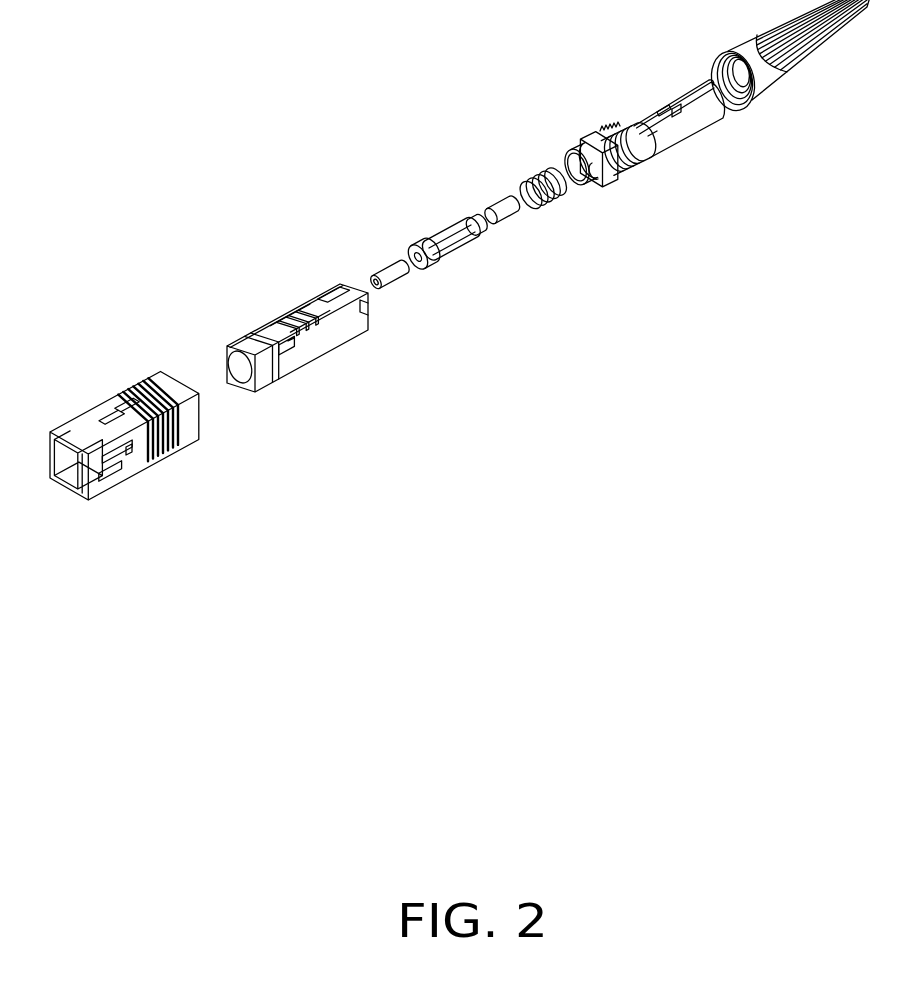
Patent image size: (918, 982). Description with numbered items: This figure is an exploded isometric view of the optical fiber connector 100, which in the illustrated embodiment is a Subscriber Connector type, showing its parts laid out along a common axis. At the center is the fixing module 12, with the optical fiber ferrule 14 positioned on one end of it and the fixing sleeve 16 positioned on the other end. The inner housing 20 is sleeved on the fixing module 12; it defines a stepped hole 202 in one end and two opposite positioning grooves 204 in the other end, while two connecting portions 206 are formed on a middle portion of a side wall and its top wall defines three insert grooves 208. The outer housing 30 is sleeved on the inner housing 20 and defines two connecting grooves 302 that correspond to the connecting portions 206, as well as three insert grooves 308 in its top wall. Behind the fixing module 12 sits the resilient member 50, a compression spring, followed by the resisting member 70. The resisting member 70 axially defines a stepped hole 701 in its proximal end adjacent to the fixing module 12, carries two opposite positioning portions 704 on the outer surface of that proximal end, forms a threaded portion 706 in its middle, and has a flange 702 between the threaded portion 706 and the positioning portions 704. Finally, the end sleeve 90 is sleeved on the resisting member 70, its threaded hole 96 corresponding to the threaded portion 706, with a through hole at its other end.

The optical fiber connector 100 is at (272, 78).
The fixing module 12 is at (440, 236).
The optical fiber ferrule 14 is at (378, 279).
The fixing sleeve 16 is at (503, 207).
The inner housing 20 is at (281, 330).
The stepped hole 202 is at (237, 366).
The positioning grooves 204 is at (364, 316).
The connecting portions 206 is at (300, 358).
The insert grooves 208 is at (305, 302).
The outer housing 30 is at (110, 430).
The connecting grooves 302 is at (127, 456).
The insert grooves 308 is at (83, 425).
The resilient member 50 is at (546, 195).
The resisting member 70 is at (617, 155).
The stepped hole 701 is at (574, 170).
The flange 702 is at (597, 136).
The positioning portions 704 is at (596, 178).
The threaded portion 706 is at (630, 162).
The end sleeve 90 is at (772, 85).
The threaded hole 96 is at (727, 68).